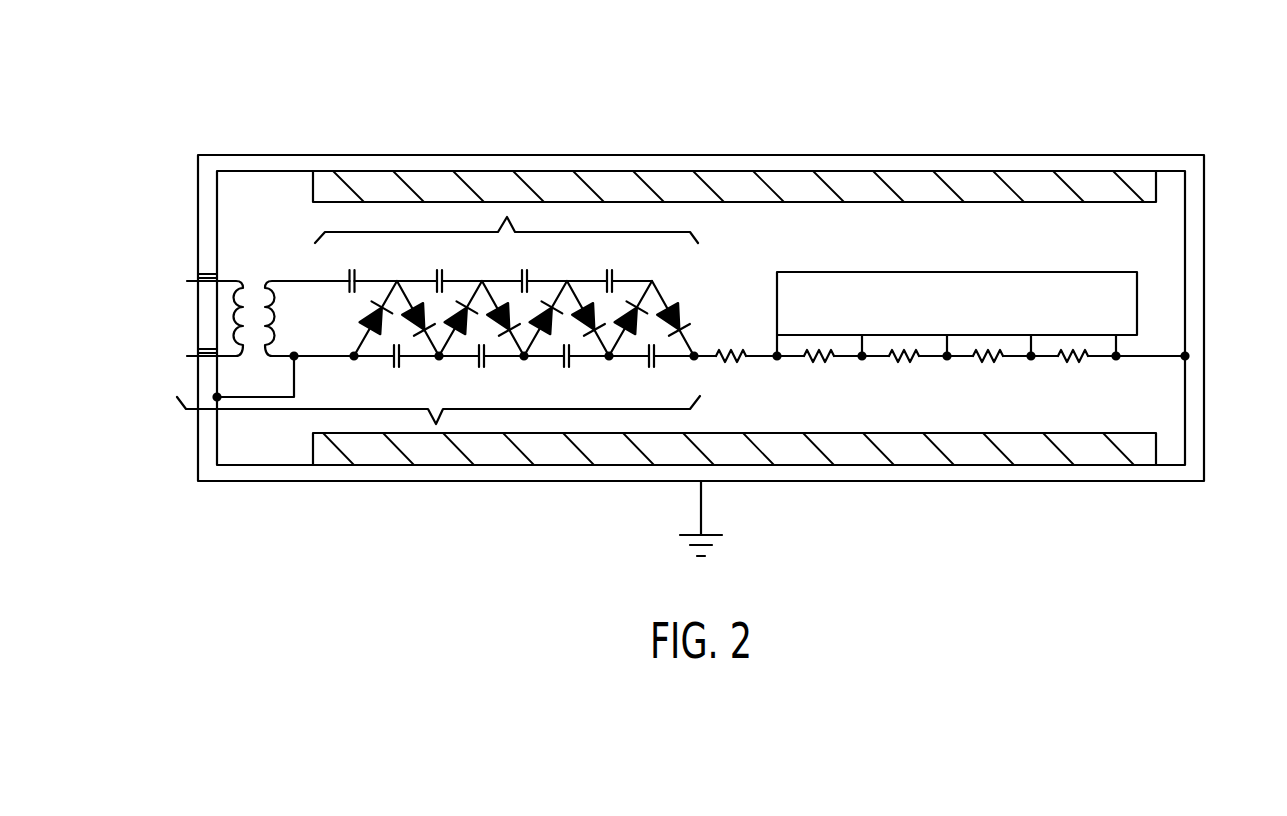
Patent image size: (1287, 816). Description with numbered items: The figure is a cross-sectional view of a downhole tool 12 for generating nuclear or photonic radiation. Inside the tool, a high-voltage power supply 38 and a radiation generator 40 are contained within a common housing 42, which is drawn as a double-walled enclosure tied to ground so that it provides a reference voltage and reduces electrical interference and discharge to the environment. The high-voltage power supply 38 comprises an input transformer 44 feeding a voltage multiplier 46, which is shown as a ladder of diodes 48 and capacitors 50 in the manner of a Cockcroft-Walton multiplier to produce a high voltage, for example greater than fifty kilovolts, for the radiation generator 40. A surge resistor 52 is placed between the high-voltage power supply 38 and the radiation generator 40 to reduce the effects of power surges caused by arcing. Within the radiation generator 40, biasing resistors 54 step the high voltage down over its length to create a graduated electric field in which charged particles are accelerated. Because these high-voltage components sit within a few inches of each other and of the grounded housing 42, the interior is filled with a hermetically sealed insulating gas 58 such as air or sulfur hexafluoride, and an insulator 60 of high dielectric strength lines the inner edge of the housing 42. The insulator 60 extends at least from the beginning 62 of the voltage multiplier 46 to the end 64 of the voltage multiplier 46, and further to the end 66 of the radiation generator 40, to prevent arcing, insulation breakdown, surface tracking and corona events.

The downhole tool 12 is at (252, 125).
The high-voltage power supply 38 is at (433, 415).
The radiation generator 40 is at (1063, 271).
The housing 42 is at (914, 163).
The input transformer 44 is at (250, 275).
The voltage multiplier 46 is at (507, 218).
The diodes 48 is at (386, 298).
The capacitors 50 is at (352, 270).
The surge resistor 52 is at (737, 367).
The biasing resistors 54 is at (1076, 360).
The insulating gas 58 is at (955, 251).
The insulator 60 is at (858, 185).
The beginning of the voltage multiplier 62 is at (298, 279).
The end of the voltage multiplier 64 is at (722, 297).
The end of the radiation generator 66 is at (1148, 300).